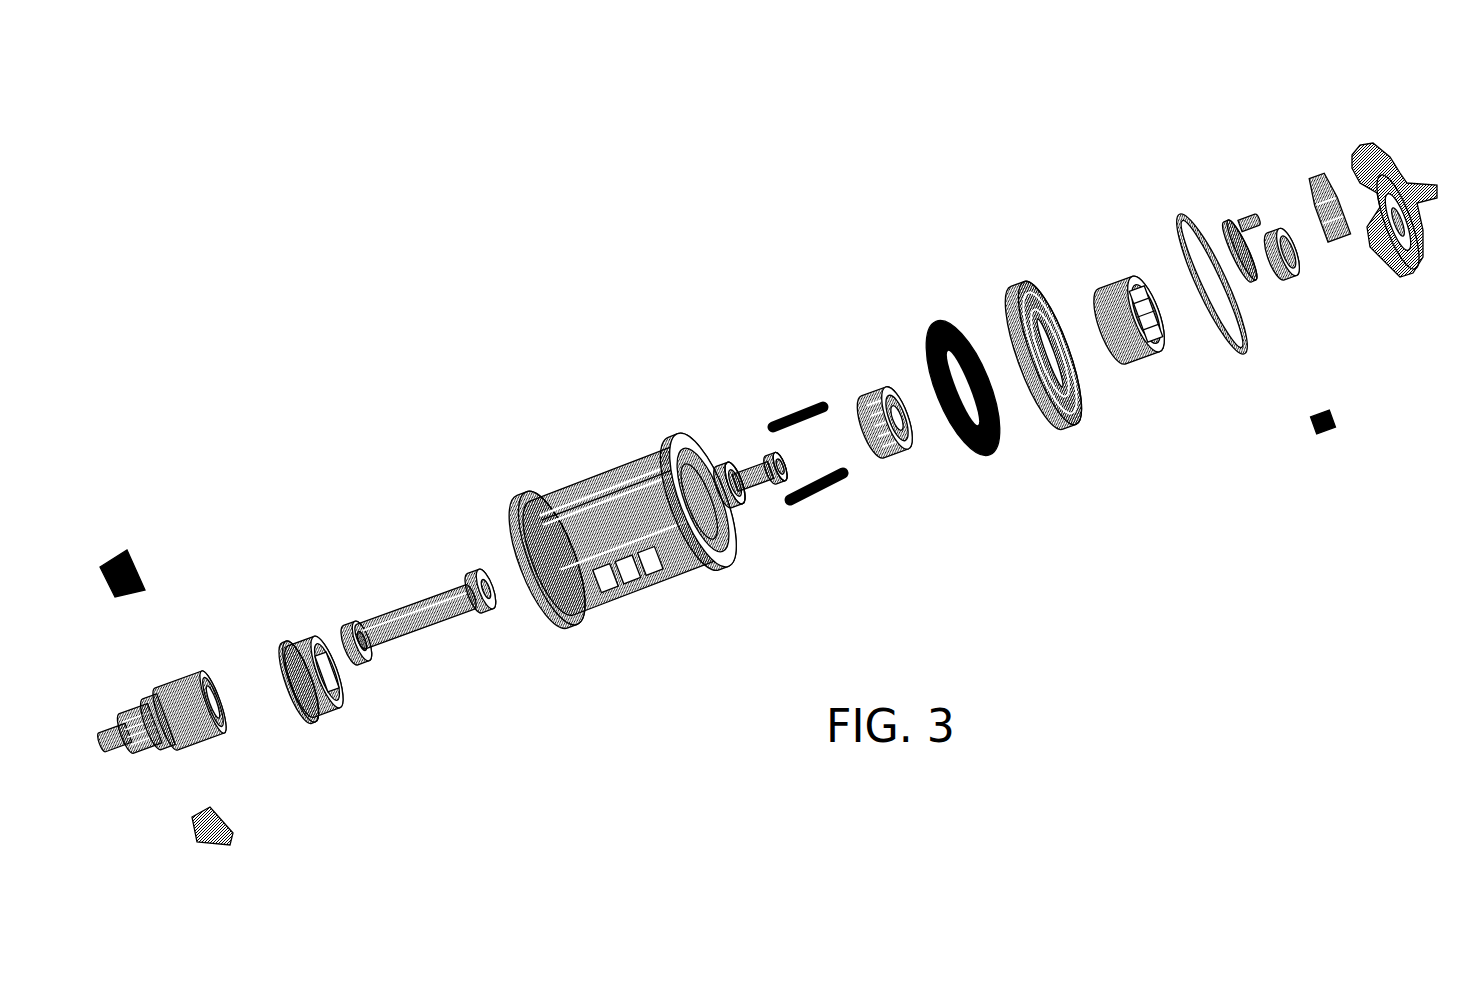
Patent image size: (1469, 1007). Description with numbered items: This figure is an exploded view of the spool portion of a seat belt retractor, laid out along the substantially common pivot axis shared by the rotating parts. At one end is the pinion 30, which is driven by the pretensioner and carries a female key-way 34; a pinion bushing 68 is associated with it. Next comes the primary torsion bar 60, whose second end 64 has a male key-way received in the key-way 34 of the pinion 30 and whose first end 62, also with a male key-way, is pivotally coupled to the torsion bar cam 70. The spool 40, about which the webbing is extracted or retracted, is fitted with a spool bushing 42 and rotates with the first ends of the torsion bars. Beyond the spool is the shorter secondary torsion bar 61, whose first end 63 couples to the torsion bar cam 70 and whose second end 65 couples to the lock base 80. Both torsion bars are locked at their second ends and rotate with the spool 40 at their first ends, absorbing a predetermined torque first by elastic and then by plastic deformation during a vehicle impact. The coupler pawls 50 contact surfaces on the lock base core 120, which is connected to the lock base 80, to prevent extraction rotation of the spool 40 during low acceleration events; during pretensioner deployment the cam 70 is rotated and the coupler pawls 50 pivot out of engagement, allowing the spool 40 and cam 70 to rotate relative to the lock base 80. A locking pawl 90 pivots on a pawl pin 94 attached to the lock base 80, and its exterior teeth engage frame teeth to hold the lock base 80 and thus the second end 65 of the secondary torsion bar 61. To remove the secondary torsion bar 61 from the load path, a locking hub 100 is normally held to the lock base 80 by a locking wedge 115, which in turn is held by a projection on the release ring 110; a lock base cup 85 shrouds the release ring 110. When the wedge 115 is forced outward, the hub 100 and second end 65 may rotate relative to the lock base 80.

The pinion 30 is at (173, 663).
The female key-way 34 is at (228, 703).
The spool 40 is at (642, 610).
The spool bushing 42 is at (988, 468).
The coupler pawl 50 is at (787, 410).
The primary torsion bar 60 is at (423, 632).
The secondary torsion bar 61 is at (750, 470).
The first end 62 is at (478, 570).
The first end 63 is at (747, 507).
The second end 64 is at (372, 673).
The second end 65 is at (777, 488).
The pinion bushing 68 is at (290, 610).
The torsion bar cam 70 is at (873, 373).
The lock base 80 is at (1393, 157).
The lock base cup 85 is at (1013, 267).
The locking pawl 90 is at (1308, 167).
The pawl pin 94 is at (1237, 203).
The locking hub 100 is at (1303, 280).
The release ring 110 is at (1180, 203).
The locking wedge 115 is at (1330, 443).
The lock base core 120 is at (1150, 360).